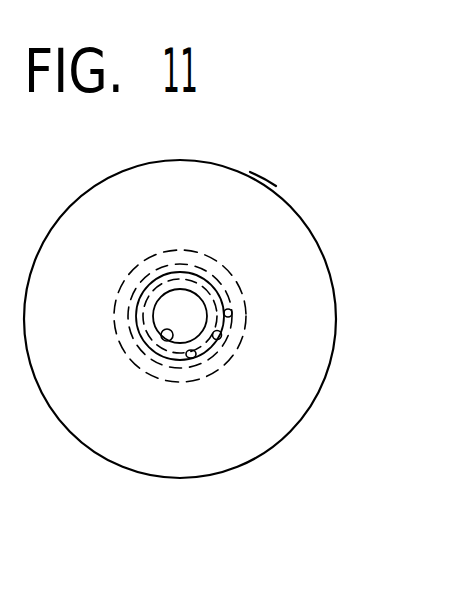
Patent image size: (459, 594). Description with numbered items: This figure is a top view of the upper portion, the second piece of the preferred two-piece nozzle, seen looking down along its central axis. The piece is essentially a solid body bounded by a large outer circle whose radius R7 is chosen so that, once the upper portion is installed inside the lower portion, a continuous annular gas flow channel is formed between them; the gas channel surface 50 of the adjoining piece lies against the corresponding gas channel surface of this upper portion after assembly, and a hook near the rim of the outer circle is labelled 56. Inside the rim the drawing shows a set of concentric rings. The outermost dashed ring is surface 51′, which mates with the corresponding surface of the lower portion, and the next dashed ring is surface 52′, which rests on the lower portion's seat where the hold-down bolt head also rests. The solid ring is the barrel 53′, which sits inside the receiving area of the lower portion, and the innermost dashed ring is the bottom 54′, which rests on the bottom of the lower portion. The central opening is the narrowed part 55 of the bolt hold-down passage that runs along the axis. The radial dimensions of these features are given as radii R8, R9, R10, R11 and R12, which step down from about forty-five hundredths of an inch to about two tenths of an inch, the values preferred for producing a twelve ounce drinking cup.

The gas channel surface 50 is at (243, 171).
The disc surface 56 is at (141, 198).
The radius R7 is at (265, 193).
The surface 51' 51′ is at (120, 286).
The surface 52' 52′ is at (139, 277).
The barrel 53′ is at (158, 268).
The bottom 54′ is at (144, 310).
The narrowed part of bolt passage 55 is at (155, 330).
The radius R8 is at (231, 275).
The radius R9 is at (231, 311).
The radius R10 is at (222, 334).
The radius R11 is at (192, 359).
The radius R12 is at (171, 341).